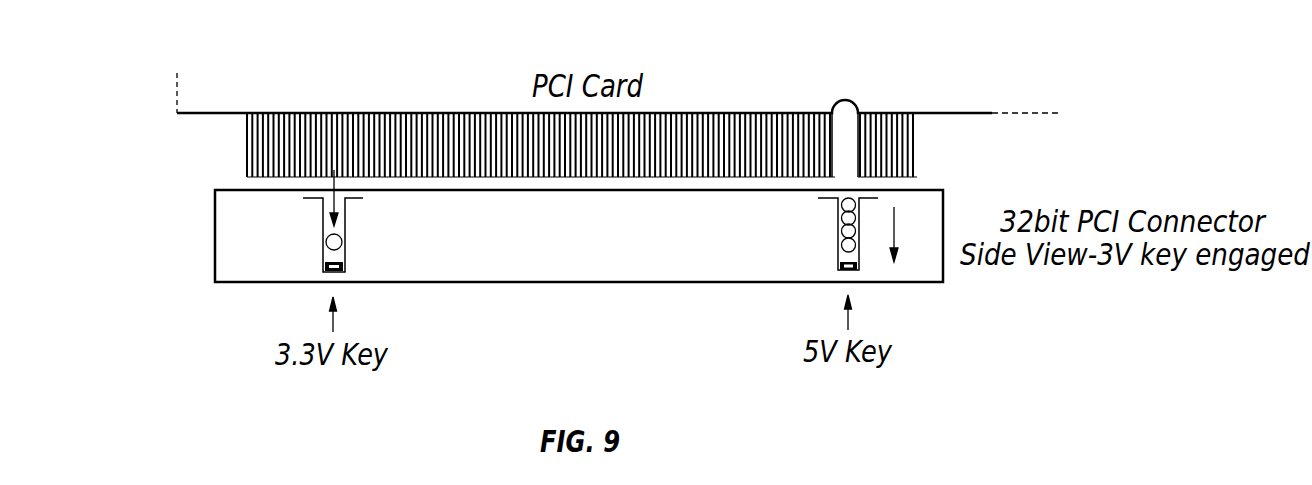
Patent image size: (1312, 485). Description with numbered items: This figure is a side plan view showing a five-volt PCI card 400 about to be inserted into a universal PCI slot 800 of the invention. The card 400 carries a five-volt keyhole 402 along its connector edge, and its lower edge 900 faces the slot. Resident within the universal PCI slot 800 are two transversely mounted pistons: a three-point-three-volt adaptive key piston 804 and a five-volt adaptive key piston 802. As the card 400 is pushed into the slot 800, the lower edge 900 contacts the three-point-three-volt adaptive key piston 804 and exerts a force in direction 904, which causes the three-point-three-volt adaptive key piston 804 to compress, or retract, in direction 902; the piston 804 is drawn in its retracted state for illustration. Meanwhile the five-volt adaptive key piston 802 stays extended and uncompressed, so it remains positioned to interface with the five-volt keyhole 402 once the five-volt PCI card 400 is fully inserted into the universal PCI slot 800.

The 5V PCI card 400 is at (965, 113).
The 5V keyhole 402 is at (845, 120).
The lower edge 900 is at (292, 182).
The universal PCI slot 800 is at (555, 282).
The direction 904 is at (345, 200).
The 3.3V adaptive key piston 804 is at (325, 270).
The 5V adaptive key piston 802 is at (840, 268).
The direction 902 is at (897, 233).